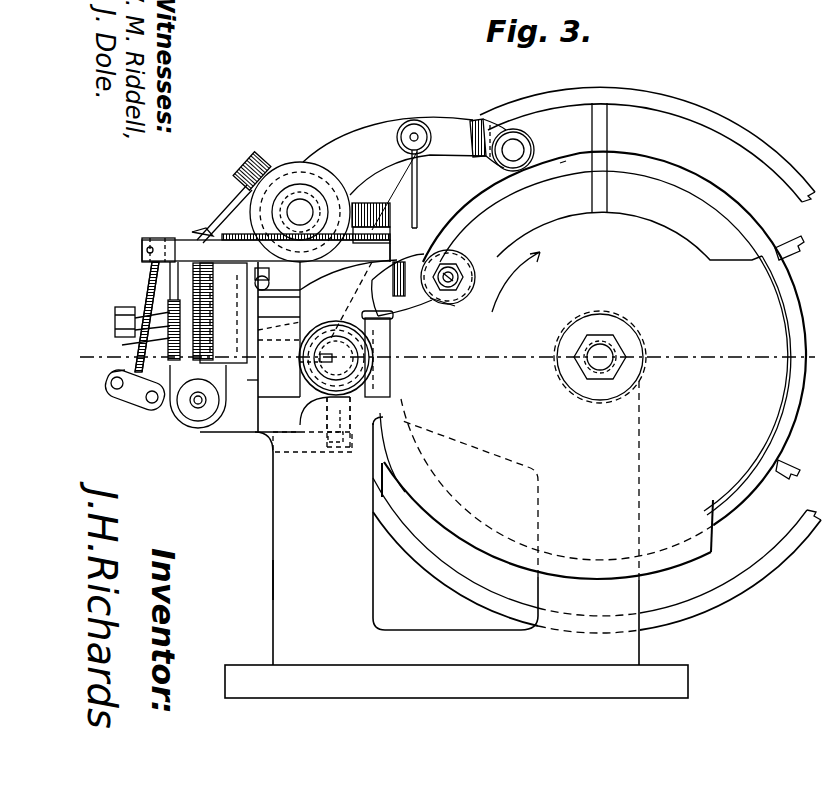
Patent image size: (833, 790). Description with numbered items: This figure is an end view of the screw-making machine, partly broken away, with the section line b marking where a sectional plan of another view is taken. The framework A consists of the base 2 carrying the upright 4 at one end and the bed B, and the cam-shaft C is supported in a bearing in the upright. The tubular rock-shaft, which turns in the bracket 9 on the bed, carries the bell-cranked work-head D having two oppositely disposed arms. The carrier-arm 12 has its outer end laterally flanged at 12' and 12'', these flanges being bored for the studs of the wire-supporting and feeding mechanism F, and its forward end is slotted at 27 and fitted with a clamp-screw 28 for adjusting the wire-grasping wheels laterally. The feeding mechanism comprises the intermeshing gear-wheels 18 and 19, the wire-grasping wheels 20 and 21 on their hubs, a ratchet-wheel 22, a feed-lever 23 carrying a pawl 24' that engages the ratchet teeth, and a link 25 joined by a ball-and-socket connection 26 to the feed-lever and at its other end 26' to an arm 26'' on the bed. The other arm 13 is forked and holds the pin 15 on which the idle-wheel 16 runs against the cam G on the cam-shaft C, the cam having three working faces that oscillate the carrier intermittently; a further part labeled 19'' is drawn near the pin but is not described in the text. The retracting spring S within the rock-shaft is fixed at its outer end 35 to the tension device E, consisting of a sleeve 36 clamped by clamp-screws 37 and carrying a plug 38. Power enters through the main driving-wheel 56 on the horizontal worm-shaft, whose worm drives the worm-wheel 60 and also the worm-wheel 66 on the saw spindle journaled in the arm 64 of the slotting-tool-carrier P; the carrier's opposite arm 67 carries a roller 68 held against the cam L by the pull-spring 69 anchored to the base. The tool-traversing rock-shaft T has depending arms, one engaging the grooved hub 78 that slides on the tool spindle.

The base 2 is at (430, 665).
The upright 4 is at (419, 522).
The bracket 9 is at (668, 238).
The carrier-arm 12 is at (294, 343).
The flange 12' is at (279, 292).
The flange 12'' is at (254, 384).
The arm 13 is at (402, 285).
The pin 15 is at (466, 268).
The idle-wheel 16 is at (450, 308).
The gear-wheel 18 is at (195, 260).
The gear-wheel 19 is at (142, 322).
The pin 19'' is at (469, 257).
The wire-grasping wheel 20 is at (210, 272).
The wire-grasping wheel 21 is at (180, 404).
The ratchet-wheel 22 is at (176, 306).
The feed-lever 23 is at (112, 366).
The pawl 24' is at (133, 340).
The link 25 is at (150, 282).
The ball-and-socket connection 26 is at (128, 393).
The connection 26' is at (143, 239).
The arm 26'' is at (204, 212).
The slot 27 is at (296, 326).
The clamp-screw 28 is at (262, 276).
The outer end fixing of spring 35 is at (350, 396).
The sleeve 36 is at (312, 388).
The clamp-screw 37 is at (392, 322).
The plug 38 is at (376, 360).
The main driving-wheel 56 is at (333, 180).
The worm-wheel 60 is at (368, 203).
The arm 64 is at (233, 196).
The worm-wheel 66 is at (258, 160).
The arm 67 is at (450, 122).
The roller 68 is at (527, 141).
The pull-spring 69 is at (418, 196).
The grooved hub 78 is at (804, 357).
The framework A is at (259, 594).
The bed B is at (262, 445).
The cam-shaft C is at (604, 352).
The work-head D is at (298, 311).
The tension device E is at (312, 370).
The wire-supporting and feeding mechanism F is at (131, 322).
The cam G is at (603, 331).
The cam L is at (555, 165).
The outer ring O is at (656, 104).
The slotting-tool-carrier P is at (306, 223).
The spring S is at (300, 360).
The rock-shaft T is at (395, 242).
The section line b is at (450, 356).
The axle e is at (206, 400).